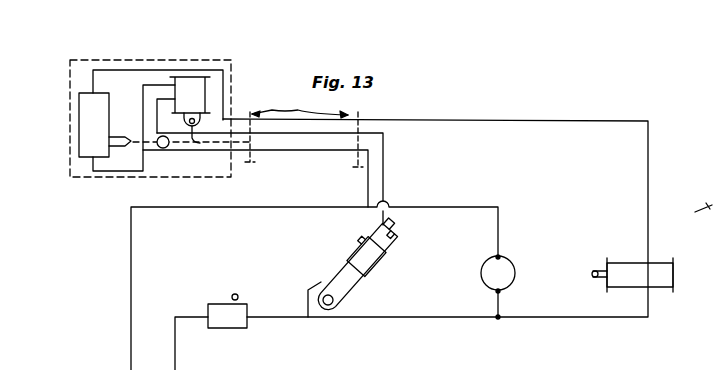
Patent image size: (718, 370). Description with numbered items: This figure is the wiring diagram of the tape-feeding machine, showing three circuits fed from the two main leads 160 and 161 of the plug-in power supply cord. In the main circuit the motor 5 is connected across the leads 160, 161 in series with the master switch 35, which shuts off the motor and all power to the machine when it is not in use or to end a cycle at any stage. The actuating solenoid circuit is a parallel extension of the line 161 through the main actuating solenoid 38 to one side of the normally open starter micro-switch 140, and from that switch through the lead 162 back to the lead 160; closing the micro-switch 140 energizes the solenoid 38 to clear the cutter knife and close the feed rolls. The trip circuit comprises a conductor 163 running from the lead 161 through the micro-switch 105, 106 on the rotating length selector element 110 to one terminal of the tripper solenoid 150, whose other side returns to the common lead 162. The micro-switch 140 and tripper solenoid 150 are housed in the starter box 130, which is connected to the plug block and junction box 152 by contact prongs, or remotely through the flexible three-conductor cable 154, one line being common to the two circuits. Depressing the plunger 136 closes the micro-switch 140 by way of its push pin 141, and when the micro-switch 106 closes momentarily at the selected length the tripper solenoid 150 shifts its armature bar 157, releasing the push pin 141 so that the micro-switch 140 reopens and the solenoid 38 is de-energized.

The starter box 130 is at (242, 62).
The micro-switch 140 is at (93, 147).
The push pin 141 is at (118, 137).
The tripper solenoid 150 is at (197, 97).
The armature bar 157 is at (197, 147).
The plunger 136 is at (168, 148).
The flexible three-conductor cable 154 is at (296, 127).
The plug block and junction box 152 is at (358, 112).
The lead 162 is at (318, 153).
The conductor 163 is at (384, 177).
The main lead 160 is at (131, 335).
The main lead 161 is at (585, 121).
The master switch 35 is at (216, 303).
The length selector element 110 is at (375, 258).
The micro-switch 106 is at (352, 252).
The micro-switch 105 is at (350, 232).
The motor 5 is at (487, 272).
The main actuating solenoid 38 is at (658, 265).